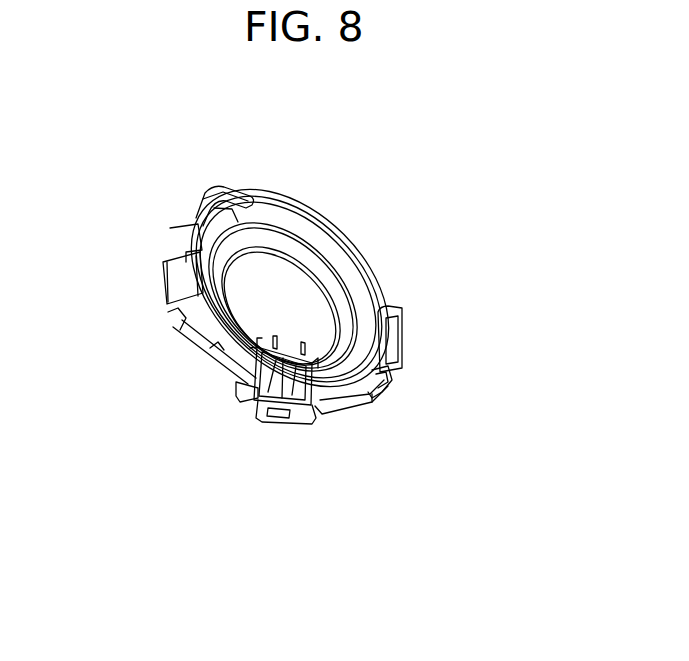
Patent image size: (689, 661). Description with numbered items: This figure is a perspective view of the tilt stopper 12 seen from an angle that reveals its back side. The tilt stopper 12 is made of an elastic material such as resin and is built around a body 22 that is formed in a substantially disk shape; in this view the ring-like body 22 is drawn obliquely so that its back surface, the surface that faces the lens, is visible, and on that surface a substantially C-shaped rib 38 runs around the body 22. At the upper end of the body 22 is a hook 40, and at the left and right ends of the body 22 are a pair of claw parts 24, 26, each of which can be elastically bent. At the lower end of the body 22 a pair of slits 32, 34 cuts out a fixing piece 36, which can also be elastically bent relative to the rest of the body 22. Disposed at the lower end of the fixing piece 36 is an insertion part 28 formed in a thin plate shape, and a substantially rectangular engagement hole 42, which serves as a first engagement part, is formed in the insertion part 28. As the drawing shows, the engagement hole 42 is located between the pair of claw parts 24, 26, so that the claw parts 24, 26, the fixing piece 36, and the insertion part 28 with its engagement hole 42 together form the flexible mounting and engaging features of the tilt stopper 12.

The tilt stopper 12 is at (402, 166).
The body 22 is at (307, 220).
The claw part 24 is at (392, 350).
The claw part 26 is at (163, 280).
The insertion part 28 is at (303, 425).
The slit 32 is at (337, 402).
The slit 34 is at (243, 375).
The fixing piece 36 is at (250, 398).
The rib 38 is at (337, 292).
The hook 40 is at (203, 190).
The engagement hole 42 is at (277, 412).